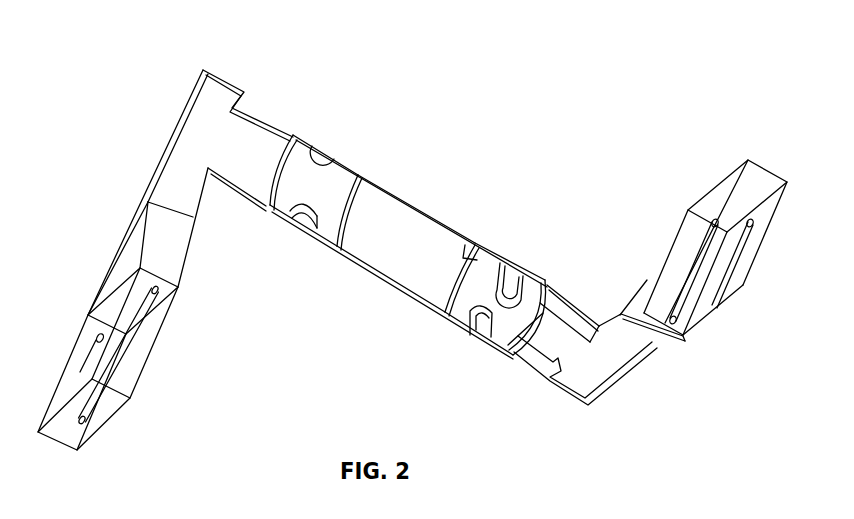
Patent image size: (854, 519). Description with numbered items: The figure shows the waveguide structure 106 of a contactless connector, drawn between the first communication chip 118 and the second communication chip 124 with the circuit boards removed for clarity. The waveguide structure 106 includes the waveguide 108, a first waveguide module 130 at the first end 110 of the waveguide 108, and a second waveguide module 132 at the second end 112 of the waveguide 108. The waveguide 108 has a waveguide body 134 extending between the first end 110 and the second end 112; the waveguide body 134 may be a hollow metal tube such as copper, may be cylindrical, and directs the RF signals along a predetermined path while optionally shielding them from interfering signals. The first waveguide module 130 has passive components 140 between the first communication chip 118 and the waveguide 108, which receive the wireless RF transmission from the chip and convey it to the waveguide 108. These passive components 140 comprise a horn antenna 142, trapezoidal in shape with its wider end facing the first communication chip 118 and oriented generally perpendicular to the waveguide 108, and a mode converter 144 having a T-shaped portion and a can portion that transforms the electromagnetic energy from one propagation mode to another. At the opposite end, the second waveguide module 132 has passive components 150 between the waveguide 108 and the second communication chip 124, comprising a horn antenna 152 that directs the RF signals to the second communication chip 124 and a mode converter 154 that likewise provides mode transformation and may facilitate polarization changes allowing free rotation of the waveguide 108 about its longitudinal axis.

The waveguide structure 106 is at (507, 150).
The waveguide 108 is at (385, 262).
The first end 110 is at (357, 195).
The second end 112 is at (478, 252).
The first communication chip 118 is at (147, 374).
The second communication chip 124 is at (765, 178).
The first waveguide module 130 is at (138, 190).
The second waveguide module 132 is at (659, 410).
The waveguide body 134 is at (410, 227).
The passive components 140 is at (221, 82).
The horn antenna 142 is at (175, 269).
The mode converter 144 is at (229, 168).
The passive components 150 is at (670, 238).
The horn antenna 152 is at (668, 340).
The mode converter 154 is at (592, 363).